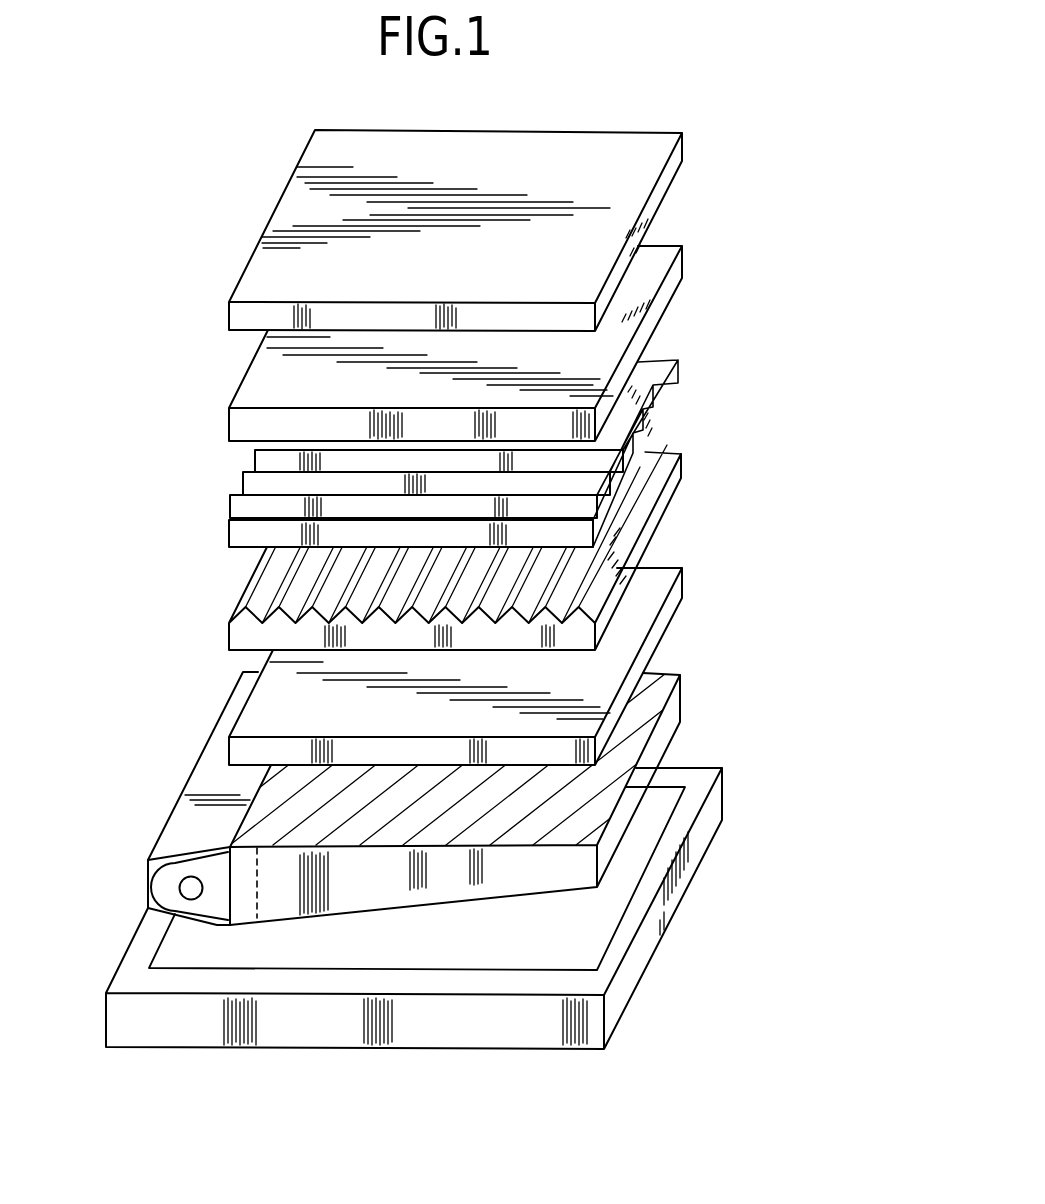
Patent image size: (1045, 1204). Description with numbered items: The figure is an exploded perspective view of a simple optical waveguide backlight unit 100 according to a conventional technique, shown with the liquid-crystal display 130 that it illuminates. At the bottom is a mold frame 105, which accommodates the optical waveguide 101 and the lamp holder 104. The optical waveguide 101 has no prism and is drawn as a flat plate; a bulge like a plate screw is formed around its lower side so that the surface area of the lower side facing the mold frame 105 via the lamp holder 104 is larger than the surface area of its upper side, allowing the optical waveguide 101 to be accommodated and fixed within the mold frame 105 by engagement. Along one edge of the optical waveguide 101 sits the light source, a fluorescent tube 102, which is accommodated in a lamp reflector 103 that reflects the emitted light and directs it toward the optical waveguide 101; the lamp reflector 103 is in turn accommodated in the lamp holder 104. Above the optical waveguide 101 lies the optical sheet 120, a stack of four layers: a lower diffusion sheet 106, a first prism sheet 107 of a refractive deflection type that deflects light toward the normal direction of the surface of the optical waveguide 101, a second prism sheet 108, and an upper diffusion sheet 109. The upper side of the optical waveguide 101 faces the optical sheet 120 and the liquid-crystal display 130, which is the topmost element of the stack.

The backlight unit 100 is at (790, 258).
The liquid-crystal display 130 is at (682, 154).
The optical sheet 120 is at (717, 273).
The upper diffusion sheet 109 is at (244, 378).
The second prism sheet 108 is at (240, 487).
The first prism sheet 107 is at (249, 580).
The lower diffusion sheet 106 is at (248, 699).
The optical waveguide 101 is at (644, 716).
The fluorescent tube 102 is at (193, 872).
The lamp reflector 103 is at (148, 858).
The lamp holder 104 is at (152, 876).
The mold frame 105 is at (703, 833).